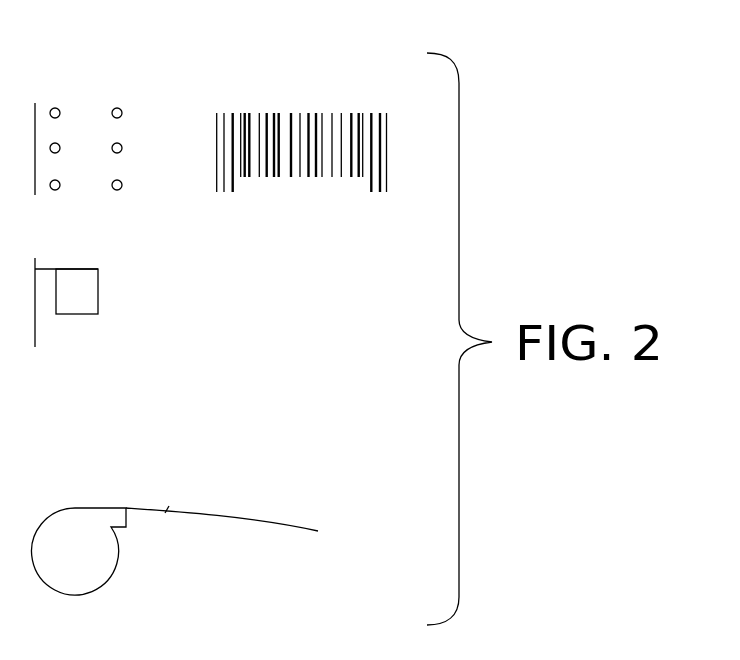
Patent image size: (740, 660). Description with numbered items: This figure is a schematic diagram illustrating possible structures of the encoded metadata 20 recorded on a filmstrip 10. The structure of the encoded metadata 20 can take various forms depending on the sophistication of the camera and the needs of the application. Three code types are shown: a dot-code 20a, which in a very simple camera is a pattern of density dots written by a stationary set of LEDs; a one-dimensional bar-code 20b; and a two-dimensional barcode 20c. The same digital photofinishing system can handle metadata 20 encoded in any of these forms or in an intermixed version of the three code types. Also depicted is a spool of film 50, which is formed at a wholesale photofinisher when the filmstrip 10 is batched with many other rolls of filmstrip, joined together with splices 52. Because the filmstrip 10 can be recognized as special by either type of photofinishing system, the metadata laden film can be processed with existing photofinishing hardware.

The filmstrip 10 is at (198, 521).
The encoded metadata 20 is at (271, 302).
The dot-code 20a is at (55, 108).
The 1-dimensional bar-code 20b is at (315, 112).
The 2-dimensional barcode 20c is at (98, 290).
The spool of film 50 is at (82, 507).
The splices 52 is at (226, 517).